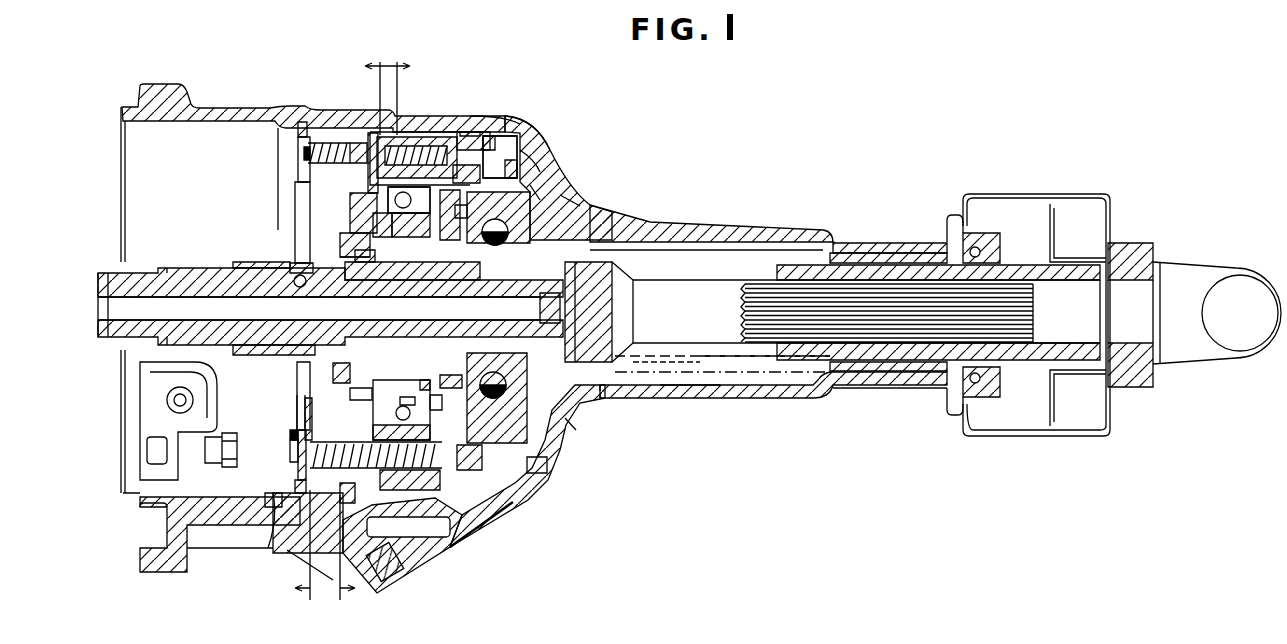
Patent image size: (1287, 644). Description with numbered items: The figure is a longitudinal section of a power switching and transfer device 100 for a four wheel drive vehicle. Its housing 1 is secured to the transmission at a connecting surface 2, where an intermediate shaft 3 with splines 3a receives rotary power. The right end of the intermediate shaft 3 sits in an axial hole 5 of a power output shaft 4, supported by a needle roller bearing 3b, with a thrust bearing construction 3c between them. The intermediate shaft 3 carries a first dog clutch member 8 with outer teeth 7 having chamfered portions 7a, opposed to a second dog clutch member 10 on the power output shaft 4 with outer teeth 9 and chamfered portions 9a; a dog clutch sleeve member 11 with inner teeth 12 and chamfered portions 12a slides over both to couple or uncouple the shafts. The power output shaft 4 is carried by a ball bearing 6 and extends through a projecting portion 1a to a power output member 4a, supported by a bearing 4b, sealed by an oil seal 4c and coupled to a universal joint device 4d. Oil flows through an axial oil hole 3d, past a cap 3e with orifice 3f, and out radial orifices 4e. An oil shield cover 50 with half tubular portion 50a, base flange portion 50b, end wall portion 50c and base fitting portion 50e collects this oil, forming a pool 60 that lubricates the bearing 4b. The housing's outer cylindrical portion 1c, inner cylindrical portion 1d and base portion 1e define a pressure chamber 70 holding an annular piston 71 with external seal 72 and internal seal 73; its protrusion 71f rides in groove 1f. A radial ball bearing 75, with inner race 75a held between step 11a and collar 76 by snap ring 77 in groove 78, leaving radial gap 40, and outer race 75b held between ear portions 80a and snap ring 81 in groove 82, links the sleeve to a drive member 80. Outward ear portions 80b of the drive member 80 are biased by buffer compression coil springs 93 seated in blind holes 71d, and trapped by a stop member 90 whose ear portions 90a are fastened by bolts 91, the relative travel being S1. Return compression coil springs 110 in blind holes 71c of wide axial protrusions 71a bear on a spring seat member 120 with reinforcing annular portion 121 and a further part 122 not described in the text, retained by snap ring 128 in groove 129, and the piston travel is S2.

The housing 1 is at (576, 214).
The projecting portion 1a is at (767, 228).
The outer cylindrical portion 1c is at (485, 123).
The inner cylindrical portion 1d is at (537, 193).
The base portion 1e is at (530, 152).
The longitudinally extending groove 1f is at (270, 556).
The connecting surface 2 is at (123, 102).
The intermediate shaft 3 is at (216, 300).
The splines 3a is at (123, 272).
The needle roller bearing 3b is at (430, 298).
The thrust bearing construction 3c is at (340, 371).
The central axial oil hole 3d is at (190, 280).
The cap 3e is at (535, 310).
The orifice 3f is at (588, 312).
The power output shaft 4 is at (652, 292).
The power output member 4a is at (907, 268).
The bearing 4b is at (863, 255).
The oil seal 4c is at (995, 240).
The universal joint device 4d is at (1200, 266).
The radially extending orifices 4e is at (590, 274).
The axial hole 5 is at (518, 252).
The ball bearing 6 is at (507, 225).
The outer teeth 7 is at (344, 235).
The chamfered portions 7a is at (356, 232).
The first dog clutch member 8 is at (342, 254).
The outer teeth 9 is at (443, 242).
The chamfered portions 9a is at (388, 280).
The second dog clutch member 10 is at (395, 293).
The dog clutch sleeve member 11 is at (460, 210).
The step 11a is at (352, 394).
The inner teeth 12 is at (453, 243).
The chamfered portions 12a is at (362, 258).
The radial gap 40 is at (405, 284).
The lubricating oil shield cover 50 is at (641, 393).
The half tubular portion 50a is at (615, 373).
The base flange portion 50b is at (548, 465).
The end wall portion 50c is at (683, 387).
The base fitting portion 50e is at (566, 200).
The pool 60 is at (742, 375).
The cylindrical pressure chamber 70 is at (540, 474).
The annular piston 71 is at (500, 160).
The wide axial protrusions 71a is at (297, 418).
The blind holes 71c is at (457, 518).
The blind holes 71d is at (505, 168).
The protrusion 71f is at (300, 554).
The external seal 72 is at (497, 502).
The internal seal 73 is at (507, 438).
The radial ball bearing 75 is at (374, 402).
The inner race 75a is at (408, 397).
The outer race 75b is at (430, 484).
The collar 76 is at (425, 380).
The snap ring 77 is at (443, 380).
The circumferential groove 78 is at (430, 400).
The drive member 80 is at (445, 158).
The inwardly extending ear portions 80a is at (303, 404).
The outwardly extending ear portions 80b is at (398, 142).
The snap ring 81 is at (457, 472).
The circumferential groove 82 is at (465, 505).
The stop member 90 is at (318, 418).
The outwardly protruding ear portions 90a is at (372, 143).
The bolts 91 is at (353, 170).
The biasing compression coil springs 93 is at (448, 178).
The power switching and transfer device 100 is at (522, 145).
The return compression coil springs 110 is at (306, 136).
The annular spring seat member 120 is at (297, 446).
The pressed short cylindrical annular portion 121 is at (297, 434).
The snap ring 122 is at (300, 155).
The snap ring 128 is at (298, 485).
The circumferential snap ring groove 129 is at (272, 500).
The depth of the notch shapes S1 is at (399, 97).
The total travel distance S2 is at (325, 594).